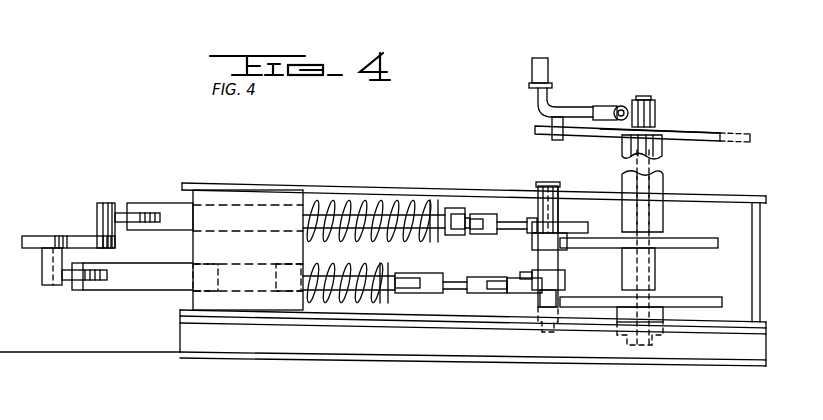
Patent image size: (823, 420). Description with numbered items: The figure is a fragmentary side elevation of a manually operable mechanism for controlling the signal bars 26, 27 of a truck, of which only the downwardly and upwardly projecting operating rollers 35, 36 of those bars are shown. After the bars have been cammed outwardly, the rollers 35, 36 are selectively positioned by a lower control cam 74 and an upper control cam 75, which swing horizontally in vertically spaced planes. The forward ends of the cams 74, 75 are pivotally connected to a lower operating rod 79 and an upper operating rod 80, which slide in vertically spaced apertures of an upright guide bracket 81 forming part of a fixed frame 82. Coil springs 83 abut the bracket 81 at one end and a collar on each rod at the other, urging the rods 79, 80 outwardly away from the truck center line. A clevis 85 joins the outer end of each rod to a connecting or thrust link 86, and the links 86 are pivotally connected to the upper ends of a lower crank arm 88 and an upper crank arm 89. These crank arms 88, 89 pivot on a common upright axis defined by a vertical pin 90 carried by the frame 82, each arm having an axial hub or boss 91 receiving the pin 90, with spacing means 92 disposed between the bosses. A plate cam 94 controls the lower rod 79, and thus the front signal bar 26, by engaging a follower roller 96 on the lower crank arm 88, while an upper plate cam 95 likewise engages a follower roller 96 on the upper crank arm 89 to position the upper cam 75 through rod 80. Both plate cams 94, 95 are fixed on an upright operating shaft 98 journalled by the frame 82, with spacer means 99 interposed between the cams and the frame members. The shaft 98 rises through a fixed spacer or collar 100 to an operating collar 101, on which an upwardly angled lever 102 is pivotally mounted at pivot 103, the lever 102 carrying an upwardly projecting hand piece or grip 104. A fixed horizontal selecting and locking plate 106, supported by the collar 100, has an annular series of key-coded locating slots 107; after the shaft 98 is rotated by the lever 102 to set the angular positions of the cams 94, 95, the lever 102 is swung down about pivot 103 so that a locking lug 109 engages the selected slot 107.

The signal bar 26 is at (35, 241).
The signal bar 27 is at (68, 237).
The operating roller 35 is at (50, 285).
The operating roller 36 is at (108, 204).
The lower control cam 74 is at (67, 286).
The upper control cam 75 is at (135, 216).
The lower operating rod 79 is at (160, 283).
The upper operating rod 80 is at (170, 210).
The upright guide bracket 81 is at (270, 202).
The fixed frame 82 is at (364, 339).
The coil spring 83 is at (403, 200).
The clevis 85 is at (483, 214).
The connecting or thrust link 86 is at (513, 222).
The lower crank arm 88 is at (518, 293).
The upper crank arm 89 is at (576, 232).
The vertical pin 90 is at (551, 183).
The axial hub or boss 91 is at (559, 202).
The spacing means 92 is at (567, 263).
The plate cam 94 is at (705, 302).
The upper plate cam 95 is at (733, 233).
The follower roller 96 is at (532, 305).
The upright operating shaft 98 is at (648, 110).
The spacer means 99 is at (661, 228).
The fixed spacer or collar 100 is at (660, 176).
The operating collar 101 is at (638, 99).
The upwardly angled lever 102 is at (569, 108).
The pivot 103 is at (618, 105).
The hand piece or grip 104 is at (543, 68).
The selecting and locking plate 106 is at (722, 133).
The locating slot 107 is at (737, 131).
The locking lug 109 is at (552, 126).